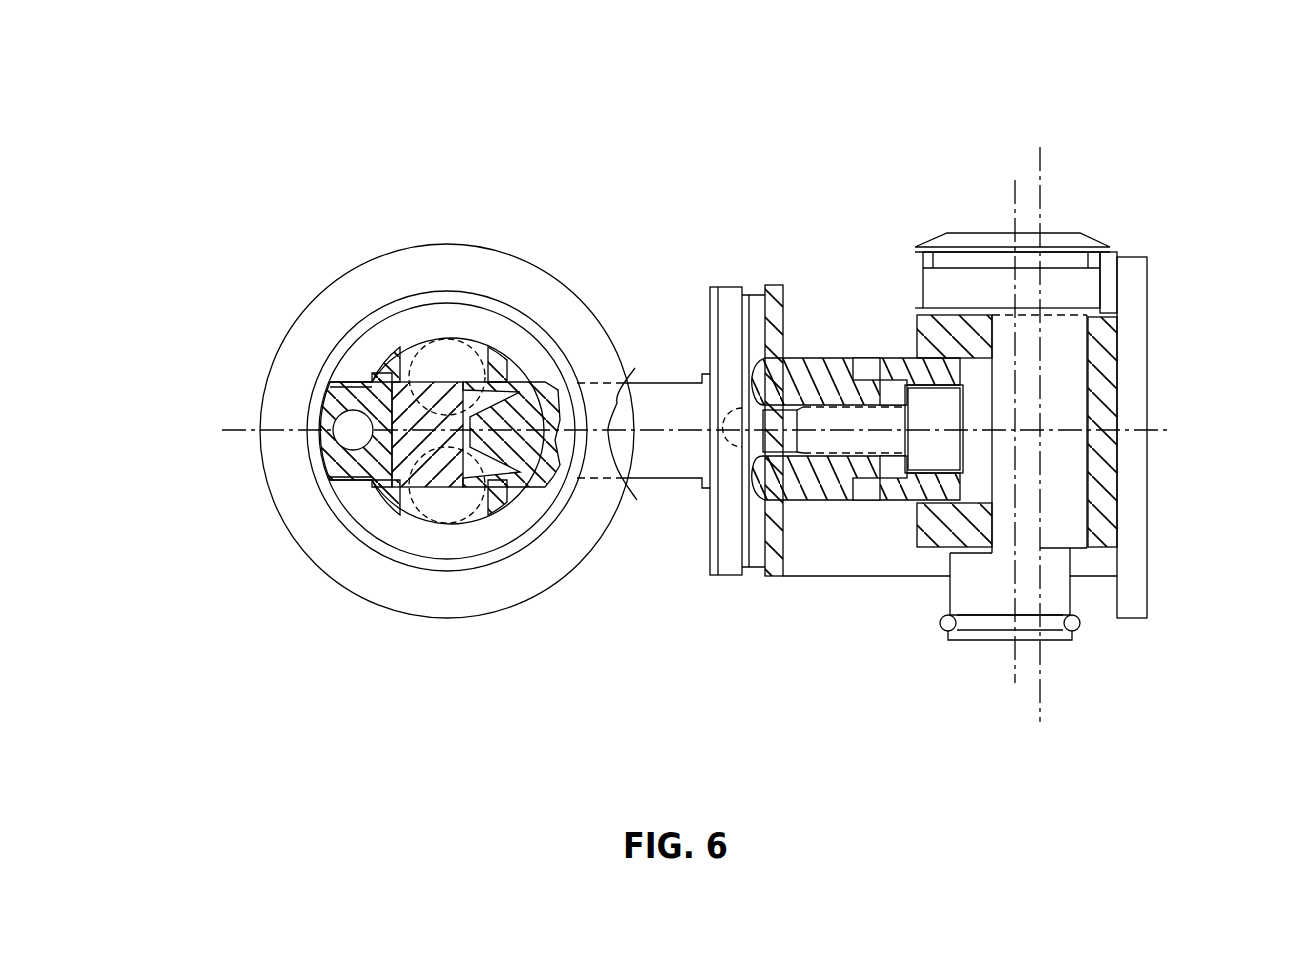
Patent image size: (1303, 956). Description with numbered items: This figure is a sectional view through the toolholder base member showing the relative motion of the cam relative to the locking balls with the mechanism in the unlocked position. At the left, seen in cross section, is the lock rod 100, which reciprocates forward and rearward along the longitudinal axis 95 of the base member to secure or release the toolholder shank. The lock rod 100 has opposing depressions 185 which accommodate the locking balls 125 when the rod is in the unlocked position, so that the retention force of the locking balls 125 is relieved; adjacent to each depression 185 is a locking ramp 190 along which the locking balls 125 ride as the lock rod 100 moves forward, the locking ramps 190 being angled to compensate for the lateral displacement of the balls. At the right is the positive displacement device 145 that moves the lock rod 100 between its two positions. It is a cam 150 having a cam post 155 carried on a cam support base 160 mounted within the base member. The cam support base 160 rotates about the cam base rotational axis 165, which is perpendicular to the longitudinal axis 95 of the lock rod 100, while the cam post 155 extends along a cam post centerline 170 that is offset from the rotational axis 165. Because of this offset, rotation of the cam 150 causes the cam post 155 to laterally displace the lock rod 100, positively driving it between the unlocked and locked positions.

The longitudinal axis 95 is at (1157, 428).
The lock rod 100 is at (598, 400).
The locking balls 125 is at (437, 355).
The positive displacement device 145 is at (1175, 203).
The cam 150 is at (1067, 478).
The cam post 155 is at (1067, 378).
The cam support base 160 is at (1072, 280).
The cam base rotational axis 165 is at (1015, 663).
The cam post centerline 170 is at (1040, 147).
The depressions 185 is at (392, 383).
The locking ramps 190 is at (500, 375).